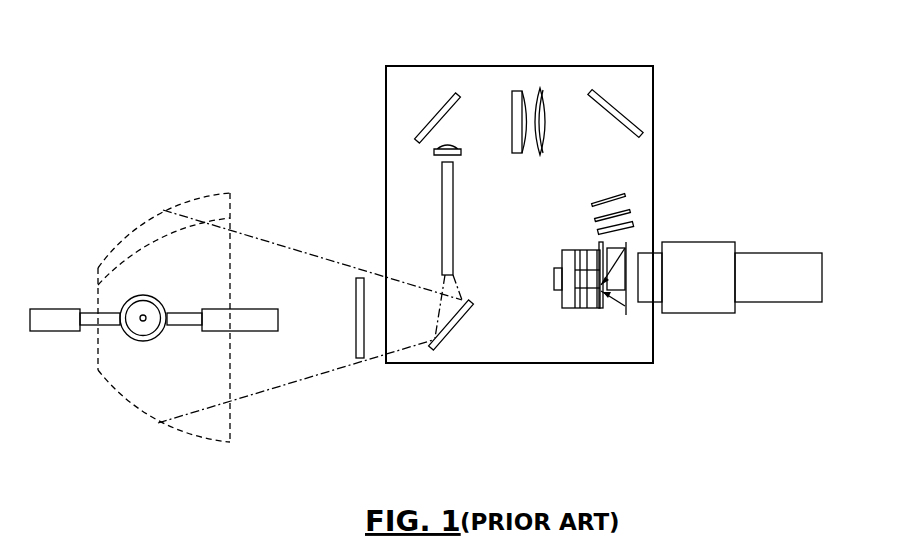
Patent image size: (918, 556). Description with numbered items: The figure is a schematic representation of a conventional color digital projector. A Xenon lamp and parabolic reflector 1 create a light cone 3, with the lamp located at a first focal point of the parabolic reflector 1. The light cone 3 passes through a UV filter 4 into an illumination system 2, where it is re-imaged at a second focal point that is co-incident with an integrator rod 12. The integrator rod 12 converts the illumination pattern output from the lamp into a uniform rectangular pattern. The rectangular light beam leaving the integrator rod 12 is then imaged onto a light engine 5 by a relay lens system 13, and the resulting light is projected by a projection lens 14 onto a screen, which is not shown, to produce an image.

The Xenon lamp and parabolic reflector 1 is at (120, 250).
The illumination system 2 is at (532, 368).
The light cone 3 is at (295, 395).
The UV filter 4 is at (352, 290).
The light engine 5 is at (632, 243).
The integrator rod 12 is at (437, 212).
The relay lens system 13 is at (607, 115).
The projection lens 14 is at (778, 303).